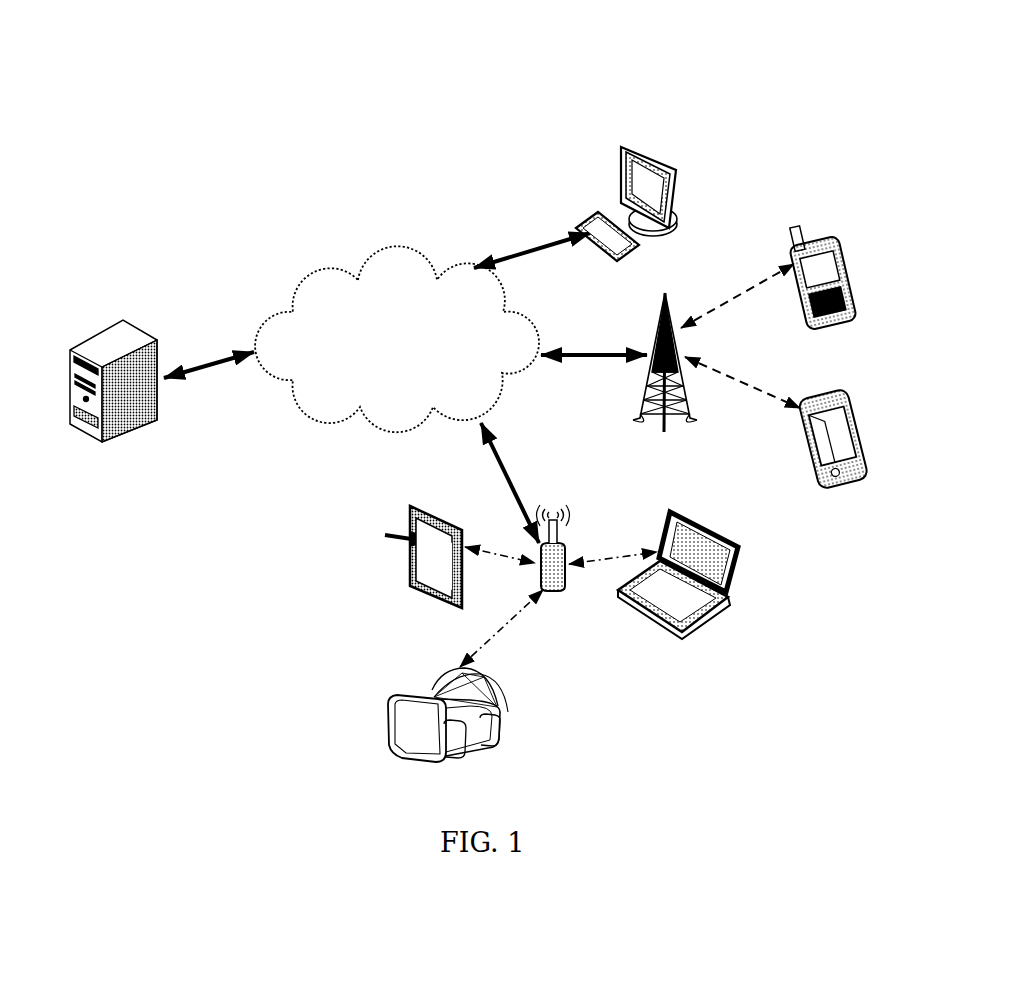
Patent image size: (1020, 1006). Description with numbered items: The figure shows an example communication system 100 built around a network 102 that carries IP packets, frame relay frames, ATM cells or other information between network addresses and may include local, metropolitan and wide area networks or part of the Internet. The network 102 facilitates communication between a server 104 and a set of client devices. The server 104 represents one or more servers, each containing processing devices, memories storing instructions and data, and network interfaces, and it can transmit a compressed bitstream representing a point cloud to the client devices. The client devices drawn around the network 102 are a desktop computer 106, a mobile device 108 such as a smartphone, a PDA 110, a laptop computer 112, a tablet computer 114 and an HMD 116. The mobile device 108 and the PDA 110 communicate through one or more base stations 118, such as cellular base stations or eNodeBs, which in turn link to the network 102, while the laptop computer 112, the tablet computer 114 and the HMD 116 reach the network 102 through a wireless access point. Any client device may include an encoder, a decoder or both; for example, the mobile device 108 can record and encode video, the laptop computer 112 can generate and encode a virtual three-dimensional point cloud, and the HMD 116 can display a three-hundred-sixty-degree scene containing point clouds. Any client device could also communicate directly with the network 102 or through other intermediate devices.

The communication system 100 is at (802, 111).
The network 102 is at (397, 339).
The server 104 is at (91, 336).
The desktop computer 106 is at (619, 161).
The mobile device 108 is at (848, 262).
The PDA 110 is at (840, 400).
The laptop computer 112 is at (745, 556).
The tablet computer 114 is at (412, 508).
The HMD 116 is at (695, 392).
The base station 118 is at (565, 518).